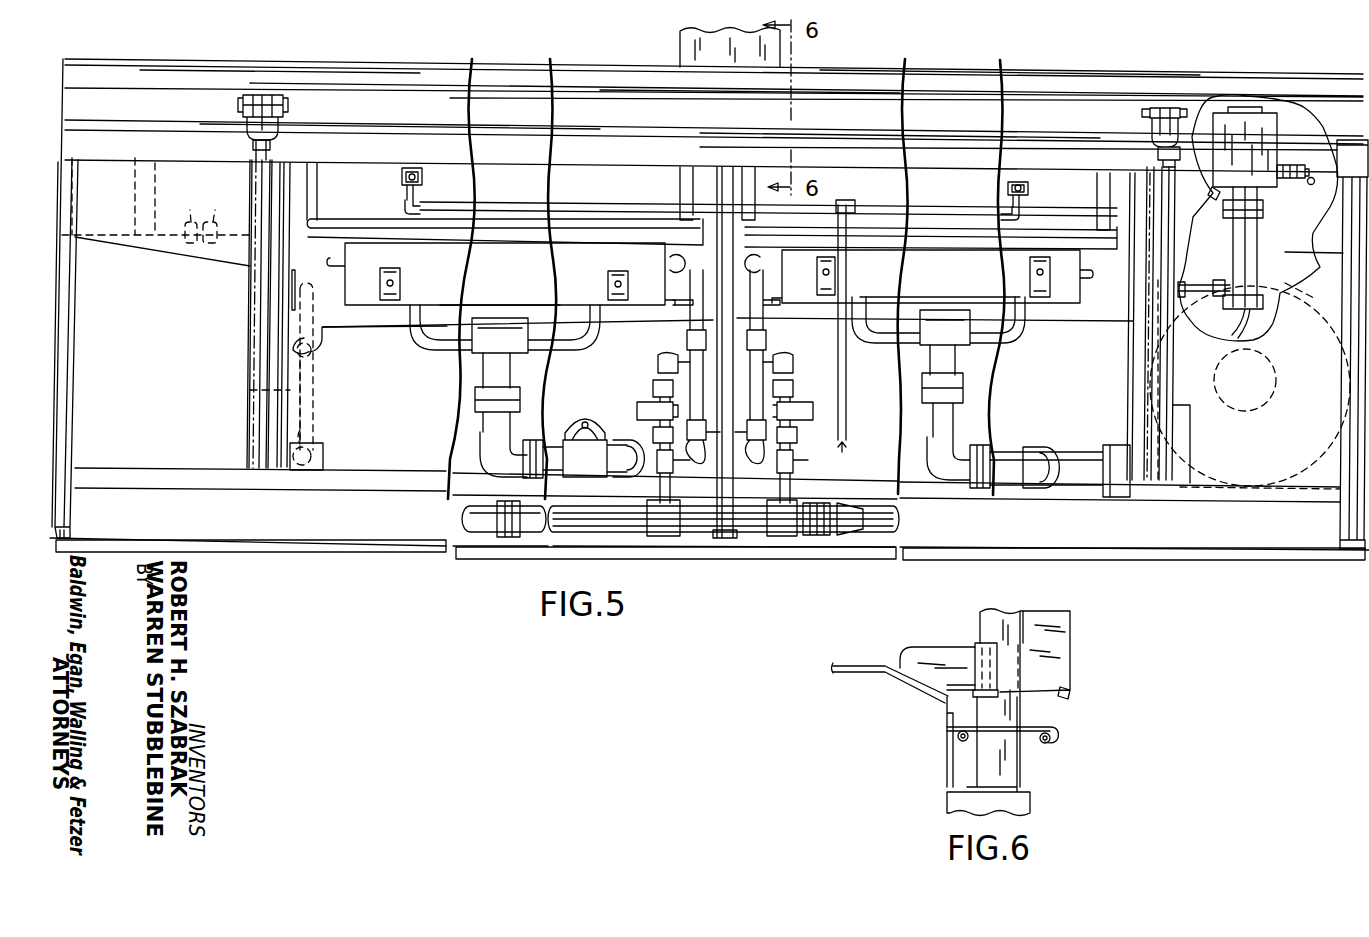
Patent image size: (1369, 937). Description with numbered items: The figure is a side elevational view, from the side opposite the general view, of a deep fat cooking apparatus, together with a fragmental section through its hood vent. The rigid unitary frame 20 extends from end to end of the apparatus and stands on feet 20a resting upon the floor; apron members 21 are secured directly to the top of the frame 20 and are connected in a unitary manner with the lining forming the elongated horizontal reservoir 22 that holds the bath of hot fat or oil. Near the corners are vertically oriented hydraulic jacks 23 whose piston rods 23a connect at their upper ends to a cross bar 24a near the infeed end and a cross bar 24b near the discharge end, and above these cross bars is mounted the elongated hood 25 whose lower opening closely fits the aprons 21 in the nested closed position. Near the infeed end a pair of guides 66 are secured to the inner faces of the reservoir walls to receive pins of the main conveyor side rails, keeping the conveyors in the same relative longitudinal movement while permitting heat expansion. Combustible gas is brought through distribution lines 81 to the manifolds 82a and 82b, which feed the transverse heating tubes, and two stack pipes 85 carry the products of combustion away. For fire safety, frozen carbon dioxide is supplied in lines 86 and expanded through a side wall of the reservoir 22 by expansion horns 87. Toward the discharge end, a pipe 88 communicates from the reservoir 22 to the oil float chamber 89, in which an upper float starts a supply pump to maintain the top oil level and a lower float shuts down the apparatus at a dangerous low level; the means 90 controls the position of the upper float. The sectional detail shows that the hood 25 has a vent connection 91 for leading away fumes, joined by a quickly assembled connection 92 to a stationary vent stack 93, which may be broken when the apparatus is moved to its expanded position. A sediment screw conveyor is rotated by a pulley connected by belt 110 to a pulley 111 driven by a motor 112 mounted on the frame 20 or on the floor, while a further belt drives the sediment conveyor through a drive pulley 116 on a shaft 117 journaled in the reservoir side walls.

In FIG. 5, the frame 20 is at (74, 289).
In FIG. 5, the feet 20a is at (70, 504).
In FIG. 5, the apron members 21 is at (636, 116).
In FIG. 5, the reservoir 22 is at (121, 207).
In FIG. 5, the hydraulic jacks 23 is at (258, 310).
In FIG. 5, the piston rods 23a is at (271, 153).
In FIG. 5, the cross bar 24a is at (262, 94).
In FIG. 5, the cross bar 24b is at (1165, 108).
In FIG. 5, the hood 25 is at (860, 76).
In FIG. 6, the hood 25 is at (845, 645).
In FIG. 5, the guides 66 is at (201, 215).
In FIG. 5, the distribution lines 81 is at (490, 426).
In FIG. 5, the manifold 82a is at (949, 288).
In FIG. 5, the manifold 82b is at (504, 283).
In FIG. 6, the stack pipes 85 is at (1008, 768).
In FIG. 5, the lines 86 is at (580, 204).
In FIG. 5, the expansion horns 87 is at (402, 178).
In FIG. 5, the pipe 88 is at (1176, 288).
In FIG. 5, the oil float chamber 89 is at (1248, 240).
In FIG. 5, the float control means 90 is at (1300, 186).
In FIG. 6, the vent connection 91 is at (933, 647).
In FIG. 6, the quickly assembled connection 92 is at (988, 642).
In FIG. 5, the vent stack 93 is at (680, 50).
In FIG. 6, the vent stack 93 is at (1060, 652).
In FIG. 5, the belt 110 is at (316, 382).
In FIG. 5, the pulley 111 is at (316, 420).
In FIG. 5, the motor 112 is at (322, 447).
In FIG. 5, the drive pulley 116 is at (318, 350).
In FIG. 5, the shaft 117 is at (317, 360).